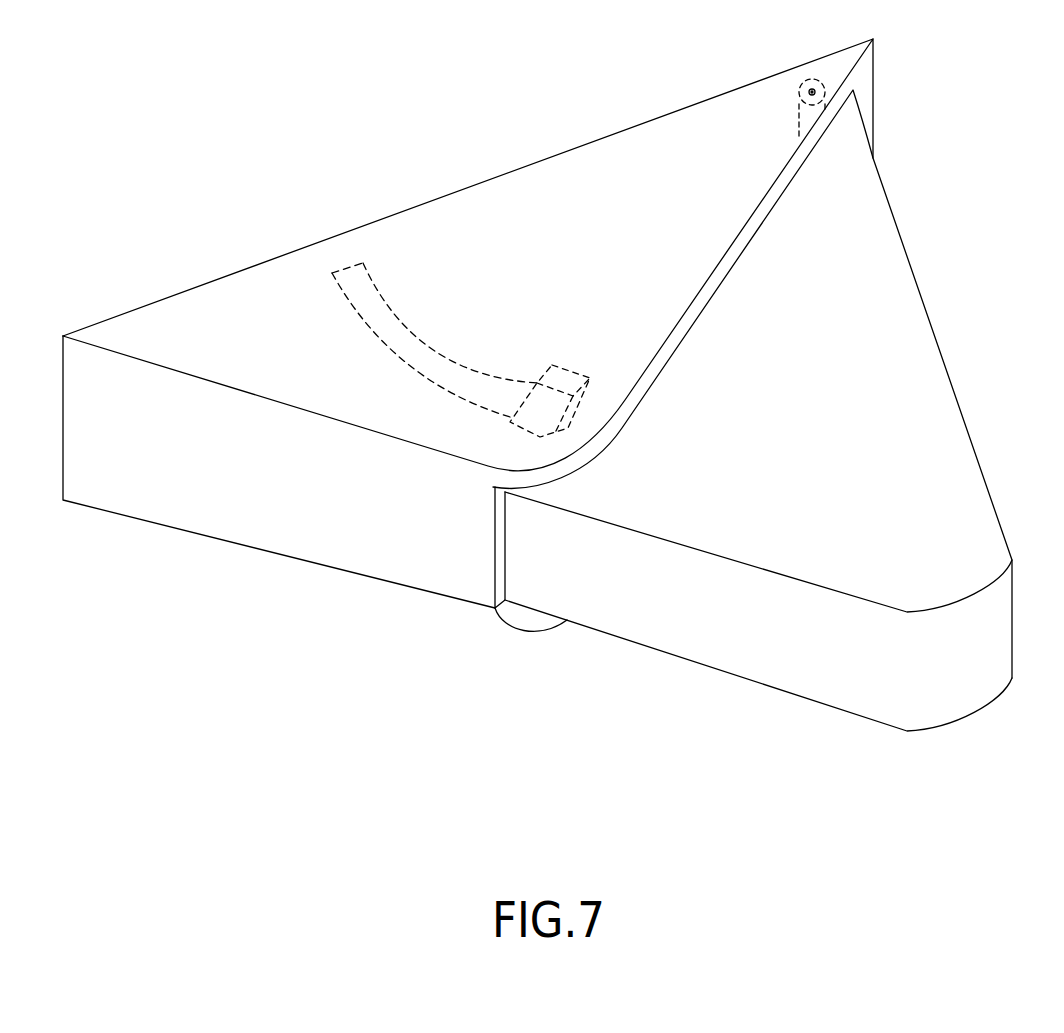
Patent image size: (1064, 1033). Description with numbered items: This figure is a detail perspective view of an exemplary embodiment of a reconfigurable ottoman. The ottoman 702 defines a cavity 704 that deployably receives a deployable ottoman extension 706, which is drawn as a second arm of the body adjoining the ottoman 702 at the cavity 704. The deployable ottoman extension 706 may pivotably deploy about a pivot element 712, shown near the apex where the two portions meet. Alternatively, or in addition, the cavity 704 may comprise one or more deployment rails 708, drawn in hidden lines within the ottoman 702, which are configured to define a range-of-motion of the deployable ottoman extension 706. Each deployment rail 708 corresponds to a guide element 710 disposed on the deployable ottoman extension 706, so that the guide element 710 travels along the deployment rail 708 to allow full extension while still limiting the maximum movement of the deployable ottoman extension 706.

The ottoman 702 is at (137, 510).
The cavity 704 is at (494, 553).
The deployable ottoman extension 706 is at (907, 307).
The deployment rail 708 is at (420, 345).
The guide element 710 is at (563, 377).
The pivot element 712 is at (806, 79).